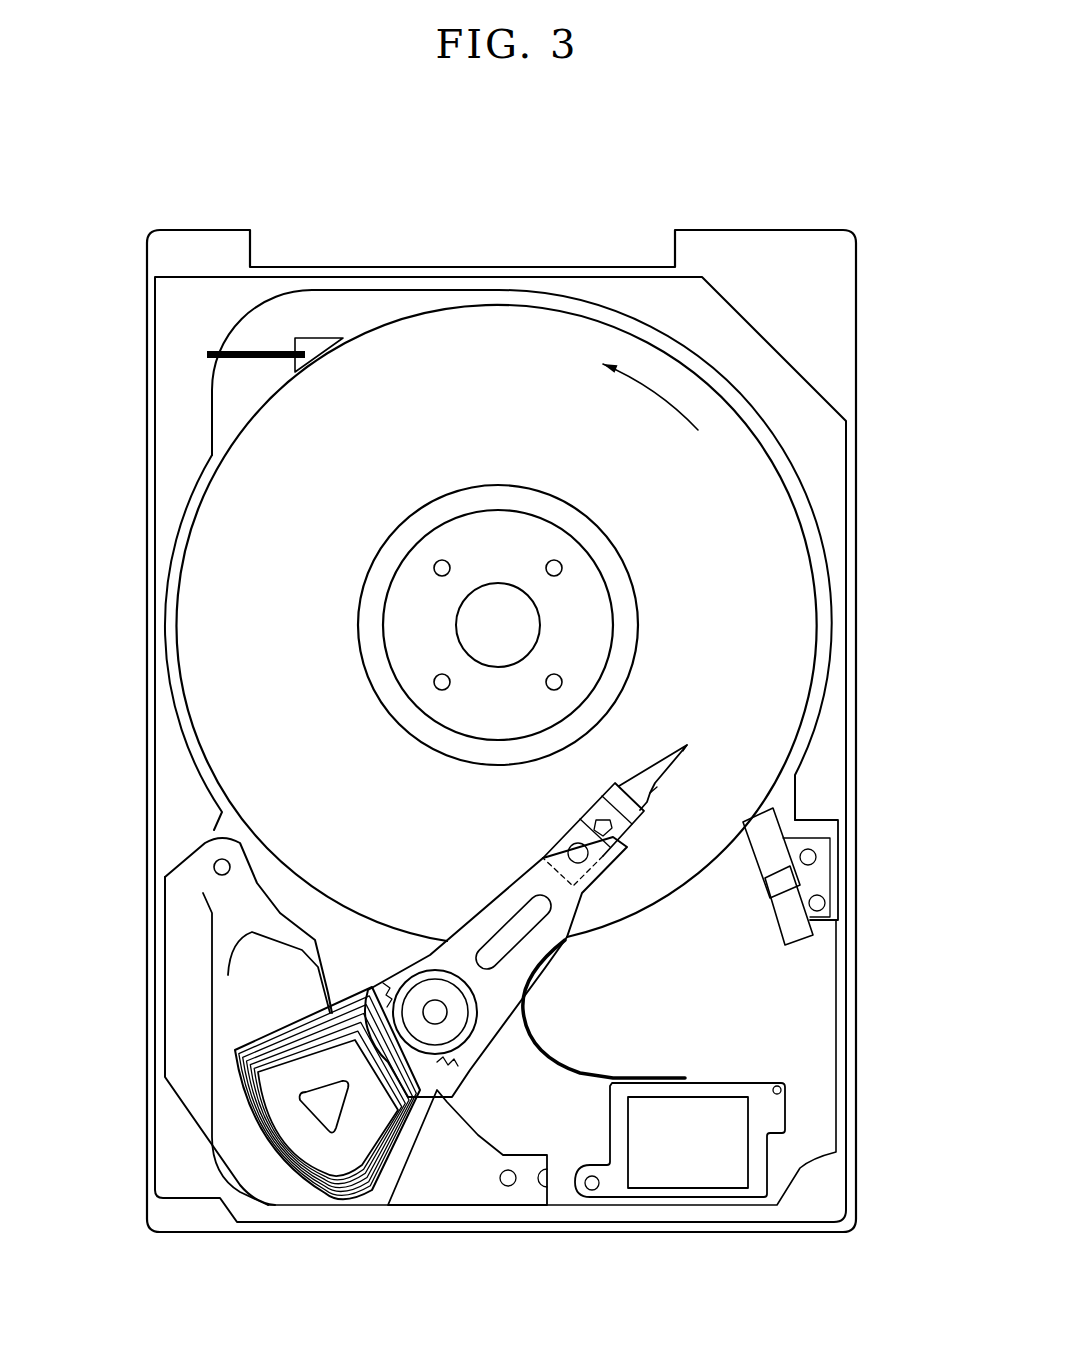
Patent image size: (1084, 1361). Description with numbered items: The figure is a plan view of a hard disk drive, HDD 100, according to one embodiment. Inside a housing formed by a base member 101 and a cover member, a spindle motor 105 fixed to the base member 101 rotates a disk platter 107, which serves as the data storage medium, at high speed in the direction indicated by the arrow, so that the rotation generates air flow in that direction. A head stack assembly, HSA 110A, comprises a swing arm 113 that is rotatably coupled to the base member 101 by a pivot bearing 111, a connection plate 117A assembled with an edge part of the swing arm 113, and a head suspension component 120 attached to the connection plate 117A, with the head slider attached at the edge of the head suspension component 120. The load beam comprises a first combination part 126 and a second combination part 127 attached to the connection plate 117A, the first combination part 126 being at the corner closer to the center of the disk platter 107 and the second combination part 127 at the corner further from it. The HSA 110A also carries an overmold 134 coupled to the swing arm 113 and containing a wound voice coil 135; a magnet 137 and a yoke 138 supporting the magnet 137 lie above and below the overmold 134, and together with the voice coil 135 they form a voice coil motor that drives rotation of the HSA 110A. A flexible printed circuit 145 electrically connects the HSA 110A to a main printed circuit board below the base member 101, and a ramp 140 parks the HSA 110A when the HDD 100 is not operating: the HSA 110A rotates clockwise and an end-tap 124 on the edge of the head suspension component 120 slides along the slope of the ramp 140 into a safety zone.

The HDD 100 is at (504, 714).
The base member 101 is at (178, 817).
The spindle motor 105 is at (495, 530).
The disk platter 107 is at (793, 648).
The HSA 110A is at (552, 921).
The pivot bearing 111 is at (433, 1008).
The swing arm 113 is at (493, 1008).
The connection plate 117A is at (612, 848).
The head suspension component 120 is at (653, 790).
The end-tap 124 is at (688, 748).
The first combination part 126 is at (618, 797).
The second combination part 127 is at (638, 818).
The overmold 134 is at (250, 1078).
The voice coil 135 is at (265, 1113).
The magnet 137 is at (426, 1180).
The yoke 138 is at (252, 1165).
The ramp 140 is at (772, 832).
The flexible printed circuit 145 is at (582, 1073).